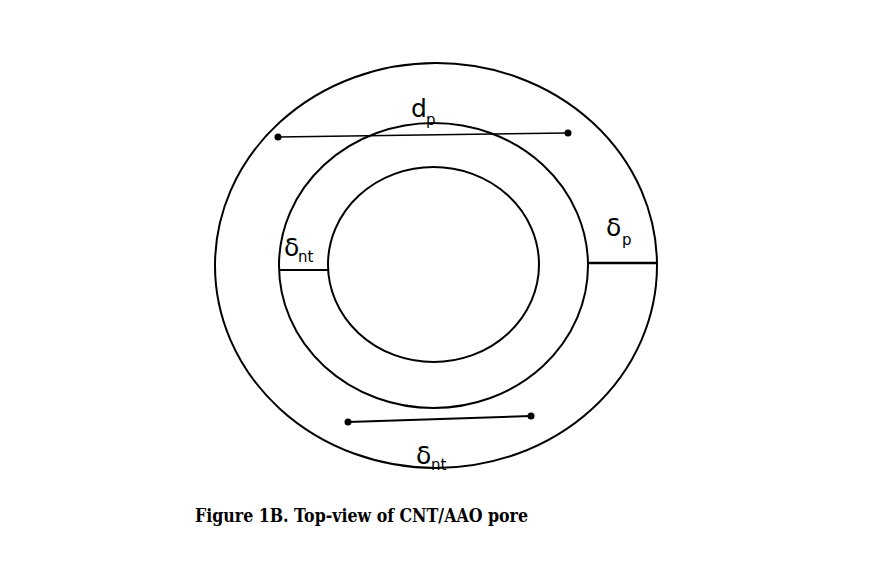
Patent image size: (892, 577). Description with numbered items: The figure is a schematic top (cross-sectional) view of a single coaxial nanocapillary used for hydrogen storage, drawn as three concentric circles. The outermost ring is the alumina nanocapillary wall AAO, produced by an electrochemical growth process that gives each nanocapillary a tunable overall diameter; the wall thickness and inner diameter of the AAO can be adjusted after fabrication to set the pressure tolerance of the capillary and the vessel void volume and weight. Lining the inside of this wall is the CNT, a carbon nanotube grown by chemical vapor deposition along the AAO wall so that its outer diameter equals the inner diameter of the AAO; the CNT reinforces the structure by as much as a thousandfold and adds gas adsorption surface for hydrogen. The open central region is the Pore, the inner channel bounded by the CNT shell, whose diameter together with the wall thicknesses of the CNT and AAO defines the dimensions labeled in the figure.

The pore Pore is at (414, 258).
The CNT shell CNT is at (304, 203).
The alumina nanocapillary wall AAO is at (240, 288).